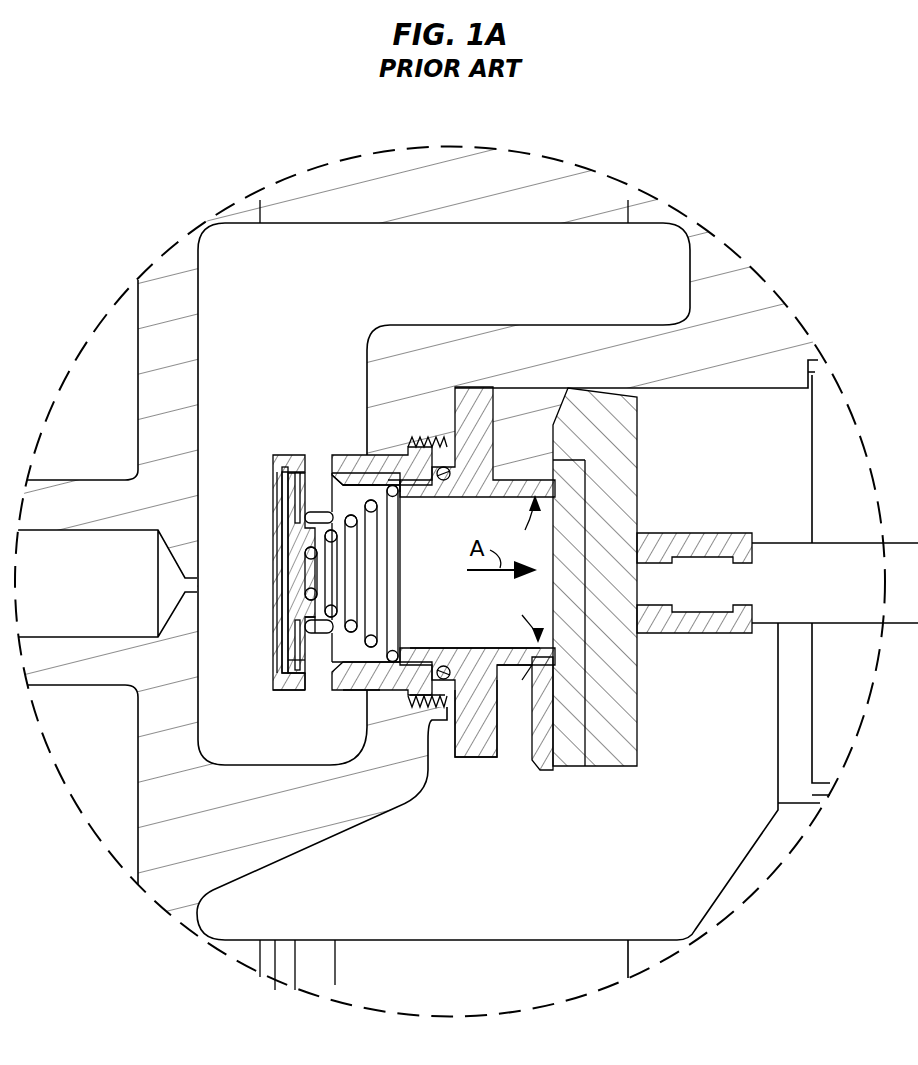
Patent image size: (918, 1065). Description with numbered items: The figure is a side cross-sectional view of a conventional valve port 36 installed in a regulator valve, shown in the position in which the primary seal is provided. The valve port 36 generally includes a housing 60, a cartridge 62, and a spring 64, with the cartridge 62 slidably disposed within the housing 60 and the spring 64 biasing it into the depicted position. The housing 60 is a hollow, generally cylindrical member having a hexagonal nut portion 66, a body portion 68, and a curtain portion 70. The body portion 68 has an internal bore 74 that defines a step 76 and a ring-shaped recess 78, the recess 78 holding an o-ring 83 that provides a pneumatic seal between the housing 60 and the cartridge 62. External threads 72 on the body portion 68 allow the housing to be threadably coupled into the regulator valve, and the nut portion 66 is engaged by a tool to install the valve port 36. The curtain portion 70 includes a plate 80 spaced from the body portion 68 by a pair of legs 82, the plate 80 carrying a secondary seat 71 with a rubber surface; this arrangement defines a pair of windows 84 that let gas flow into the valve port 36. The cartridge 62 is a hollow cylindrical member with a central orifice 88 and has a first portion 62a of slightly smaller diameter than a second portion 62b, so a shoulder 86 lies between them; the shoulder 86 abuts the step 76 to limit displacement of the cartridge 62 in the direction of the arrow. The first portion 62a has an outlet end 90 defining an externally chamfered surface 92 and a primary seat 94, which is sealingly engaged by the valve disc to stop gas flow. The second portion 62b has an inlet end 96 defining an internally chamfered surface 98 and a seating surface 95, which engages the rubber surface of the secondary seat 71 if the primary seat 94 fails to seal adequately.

The valve port 36 is at (358, 698).
The housing 60 is at (491, 717).
The cartridge 62 is at (509, 481).
The first portion 62a is at (484, 648).
The second portion 62b is at (358, 477).
The spring 64 is at (372, 509).
The hexagonal nut portion 66 is at (477, 745).
The body portion 68 is at (380, 692).
The curtain portion 70 is at (292, 691).
The secondary seat 71 is at (296, 566).
The external threads 72 is at (446, 440).
The internal bore 74 is at (376, 477).
The step 76 is at (398, 493).
The ring-shaped recess 78 is at (447, 467).
The plate 80 is at (280, 472).
The legs 82 is at (312, 630).
The o-ring 83 is at (443, 681).
The windows 84 is at (310, 691).
The shoulder 86 is at (412, 703).
The central orifice 88 is at (525, 526).
The outlet end 90 is at (521, 617).
The externally chamfered surface 92 is at (556, 682).
The primary seat 94 is at (548, 647).
The seating surface 95 is at (338, 480).
The inlet end 96 is at (352, 691).
The internally chamfered surface 98 is at (305, 658).